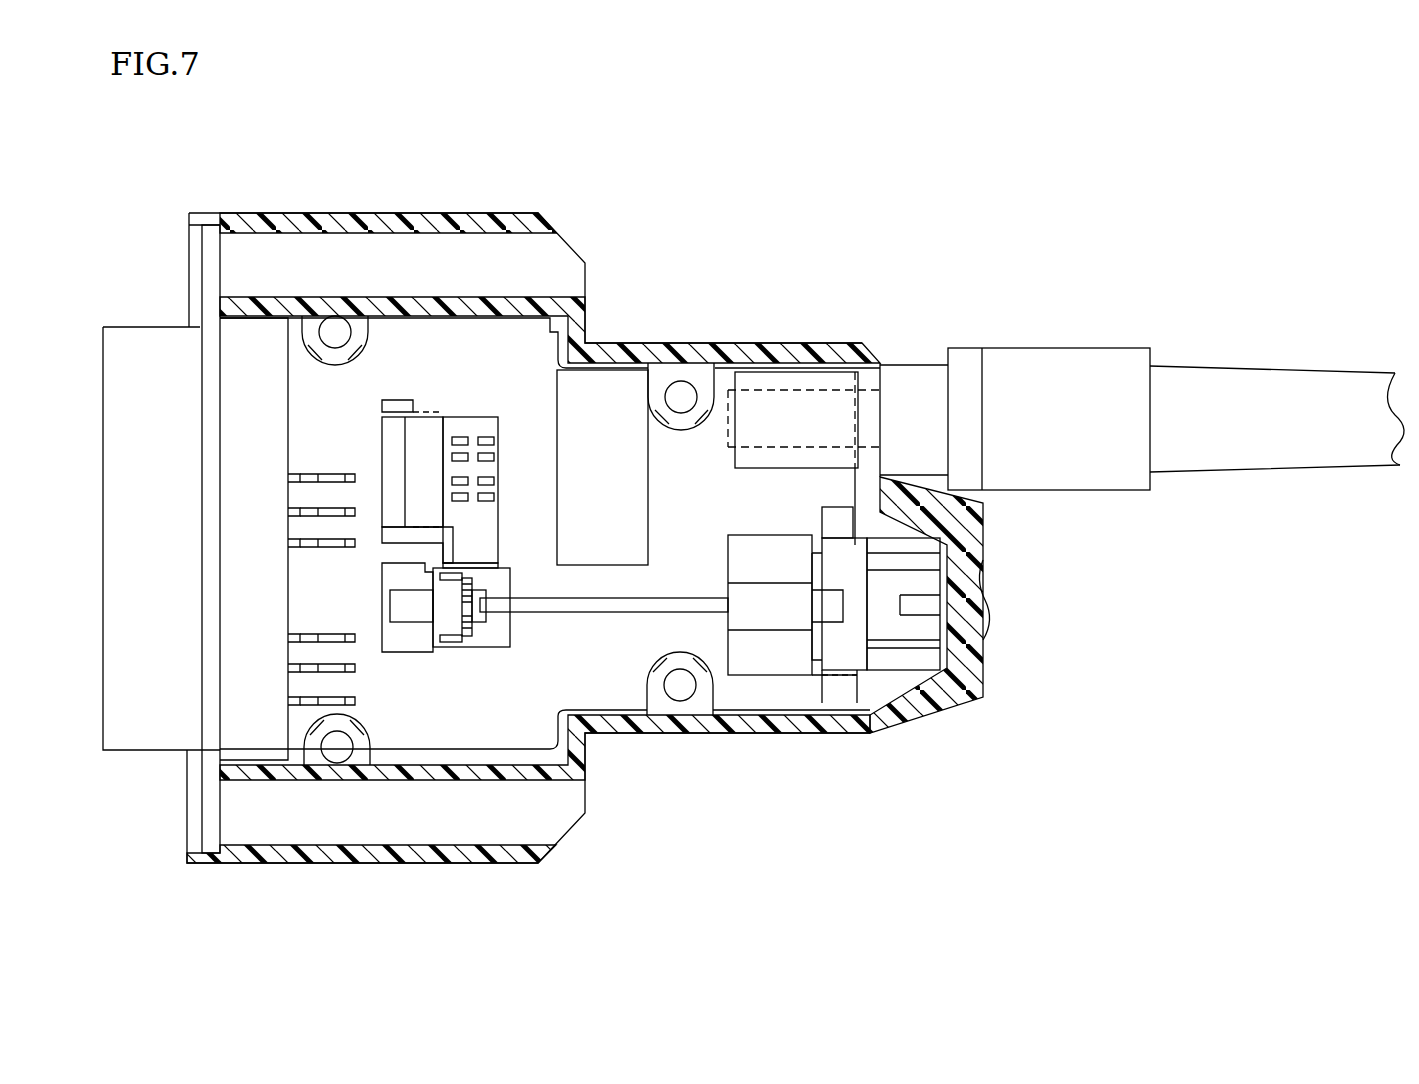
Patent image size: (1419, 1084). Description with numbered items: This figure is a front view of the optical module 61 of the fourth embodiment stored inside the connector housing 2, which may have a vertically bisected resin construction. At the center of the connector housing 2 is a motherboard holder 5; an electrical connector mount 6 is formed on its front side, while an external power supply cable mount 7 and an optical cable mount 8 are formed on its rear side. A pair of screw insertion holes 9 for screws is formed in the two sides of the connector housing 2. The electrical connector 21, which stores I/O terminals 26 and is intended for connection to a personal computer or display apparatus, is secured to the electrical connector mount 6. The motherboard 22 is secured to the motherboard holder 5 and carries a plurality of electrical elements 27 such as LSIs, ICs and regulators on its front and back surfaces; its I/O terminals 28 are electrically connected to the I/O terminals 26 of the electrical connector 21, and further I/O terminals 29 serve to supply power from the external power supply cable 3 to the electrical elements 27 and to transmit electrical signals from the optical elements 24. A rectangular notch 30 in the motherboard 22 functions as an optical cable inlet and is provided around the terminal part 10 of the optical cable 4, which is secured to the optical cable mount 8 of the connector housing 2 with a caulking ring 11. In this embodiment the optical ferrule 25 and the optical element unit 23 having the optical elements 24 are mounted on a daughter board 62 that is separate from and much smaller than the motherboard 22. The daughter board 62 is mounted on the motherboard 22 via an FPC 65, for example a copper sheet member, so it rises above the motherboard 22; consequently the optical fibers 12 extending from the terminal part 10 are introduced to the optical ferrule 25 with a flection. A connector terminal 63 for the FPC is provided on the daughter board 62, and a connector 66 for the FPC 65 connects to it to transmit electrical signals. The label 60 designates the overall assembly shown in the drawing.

The connector housing 2 is at (528, 530).
The external power supply cable 3 is at (1100, 346).
The optical cable 4 is at (968, 665).
The motherboard holder 5 is at (485, 330).
The electrical connector mount 6 is at (202, 232).
The external power supply cable mount 7 is at (888, 370).
The optical cable mount 8 is at (920, 655).
The screw insertion holes 9 is at (430, 240).
The terminal part 10 is at (765, 590).
The caulking ring 11 is at (858, 705).
The optical fibers 12 is at (577, 614).
The electrical connector 21 is at (130, 326).
The motherboard 22 is at (565, 320).
The optical element unit 23 is at (410, 631).
The optical elements 24 is at (410, 624).
The optical ferrule 25 is at (486, 564).
The I/O terminals 26 is at (290, 477).
The electrical elements 27 is at (652, 525).
The I/O terminals 28 is at (333, 476).
The I/O terminals 29 is at (486, 435).
The rectangular notch 30 is at (730, 548).
The connector assembly 60 is at (836, 202).
The optical module 61 is at (442, 449).
The daughter board 62 is at (498, 468).
The connector terminal 63 is at (425, 414).
The FPC 65 is at (385, 409).
The connector 66 is at (412, 403).